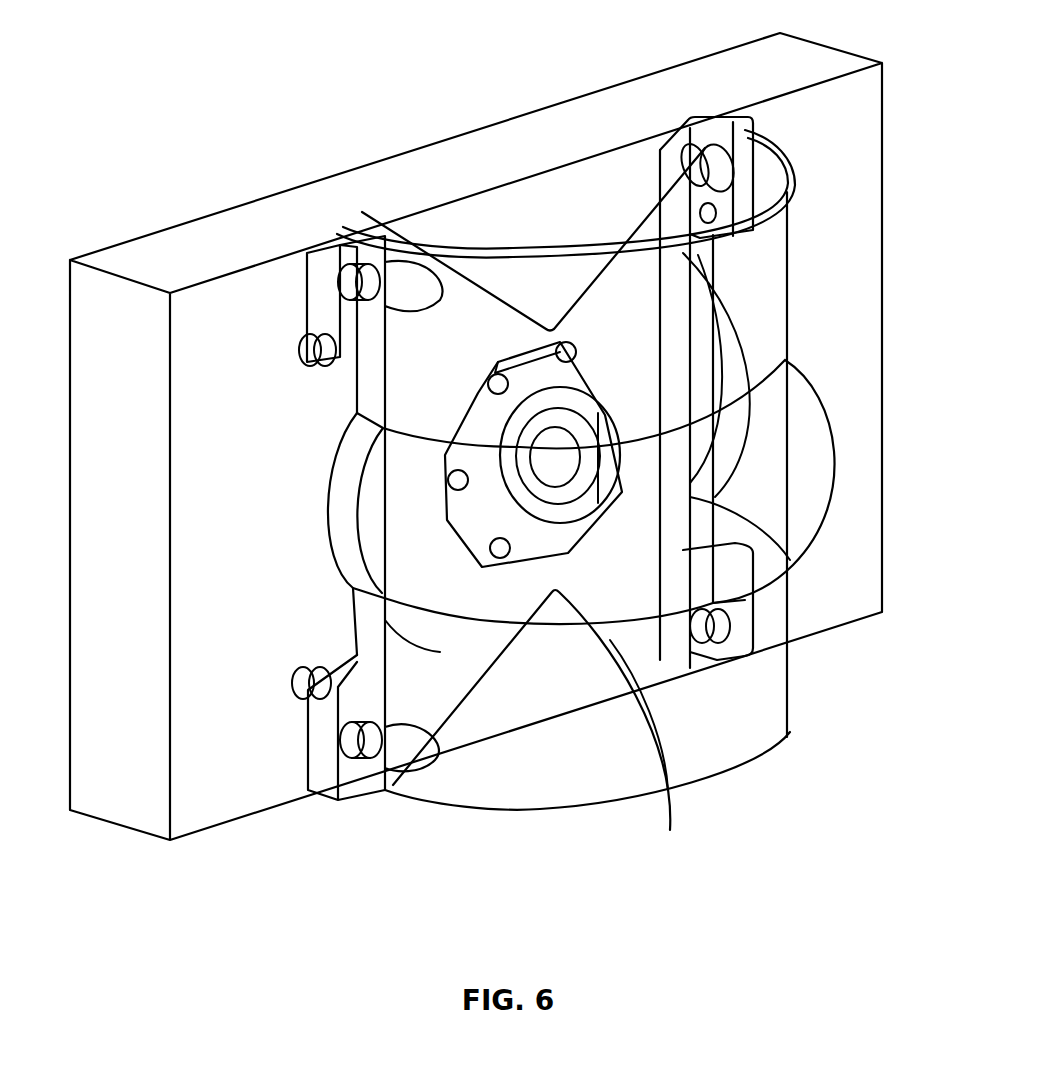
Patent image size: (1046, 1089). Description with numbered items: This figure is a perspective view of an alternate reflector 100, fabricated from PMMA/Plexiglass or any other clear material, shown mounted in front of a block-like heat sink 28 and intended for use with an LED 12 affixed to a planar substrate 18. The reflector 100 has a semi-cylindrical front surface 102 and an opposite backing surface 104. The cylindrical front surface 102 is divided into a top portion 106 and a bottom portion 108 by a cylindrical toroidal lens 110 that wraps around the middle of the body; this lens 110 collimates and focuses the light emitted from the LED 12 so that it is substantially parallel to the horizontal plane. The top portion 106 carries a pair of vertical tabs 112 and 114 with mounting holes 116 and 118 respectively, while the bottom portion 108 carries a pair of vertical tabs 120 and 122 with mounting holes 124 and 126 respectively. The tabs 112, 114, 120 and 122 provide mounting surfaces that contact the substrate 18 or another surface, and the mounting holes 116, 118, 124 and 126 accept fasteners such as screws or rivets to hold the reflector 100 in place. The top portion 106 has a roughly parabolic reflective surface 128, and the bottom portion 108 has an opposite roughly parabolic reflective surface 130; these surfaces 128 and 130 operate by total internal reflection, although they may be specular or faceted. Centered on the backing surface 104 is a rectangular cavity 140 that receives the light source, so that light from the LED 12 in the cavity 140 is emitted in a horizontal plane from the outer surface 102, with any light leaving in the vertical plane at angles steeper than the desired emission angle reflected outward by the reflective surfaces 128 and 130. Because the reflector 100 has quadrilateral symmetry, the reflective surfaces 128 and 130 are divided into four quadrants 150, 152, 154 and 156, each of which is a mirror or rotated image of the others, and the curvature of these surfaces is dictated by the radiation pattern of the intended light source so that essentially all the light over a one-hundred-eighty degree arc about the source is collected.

The LED 12 is at (446, 446).
The planar substrate 18 is at (669, 800).
The heat sink 28 is at (193, 238).
The reflector 100 is at (787, 360).
The semi-cylindrical front surface 102 is at (780, 688).
The backing surface 104 is at (490, 285).
The top portion 106 is at (457, 293).
The bottom portion 108 is at (443, 705).
The cylindrical toroidal lens 110 is at (840, 447).
The vertical tab 112 is at (318, 293).
The vertical tab 114 is at (753, 137).
The mounting hole 116 is at (353, 267).
The mounting hole 118 is at (710, 142).
The vertical tab 120 is at (323, 760).
The vertical tab 122 is at (748, 617).
The mounting hole 124 is at (370, 747).
The mounting hole 126 is at (720, 647).
The parabolic reflective surface 128 is at (640, 190).
The parabolic reflective surface 130 is at (483, 690).
The cavity 140 is at (600, 500).
The quadrant 150 is at (559, 280).
The quadrant 152 is at (775, 331).
The quadrant 154 is at (410, 645).
The quadrant 156 is at (723, 570).